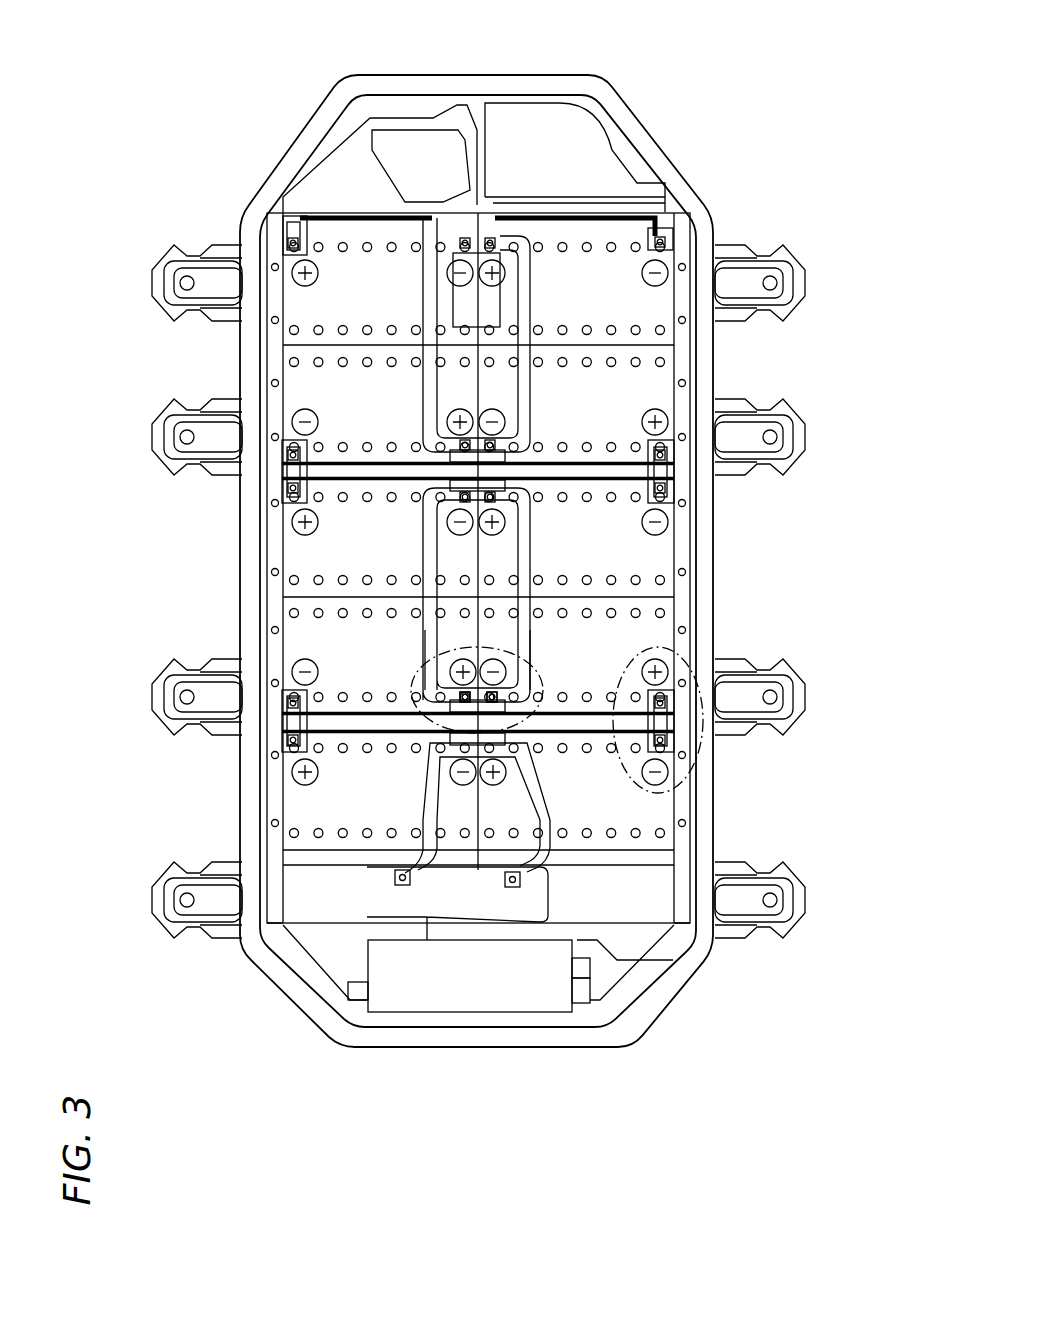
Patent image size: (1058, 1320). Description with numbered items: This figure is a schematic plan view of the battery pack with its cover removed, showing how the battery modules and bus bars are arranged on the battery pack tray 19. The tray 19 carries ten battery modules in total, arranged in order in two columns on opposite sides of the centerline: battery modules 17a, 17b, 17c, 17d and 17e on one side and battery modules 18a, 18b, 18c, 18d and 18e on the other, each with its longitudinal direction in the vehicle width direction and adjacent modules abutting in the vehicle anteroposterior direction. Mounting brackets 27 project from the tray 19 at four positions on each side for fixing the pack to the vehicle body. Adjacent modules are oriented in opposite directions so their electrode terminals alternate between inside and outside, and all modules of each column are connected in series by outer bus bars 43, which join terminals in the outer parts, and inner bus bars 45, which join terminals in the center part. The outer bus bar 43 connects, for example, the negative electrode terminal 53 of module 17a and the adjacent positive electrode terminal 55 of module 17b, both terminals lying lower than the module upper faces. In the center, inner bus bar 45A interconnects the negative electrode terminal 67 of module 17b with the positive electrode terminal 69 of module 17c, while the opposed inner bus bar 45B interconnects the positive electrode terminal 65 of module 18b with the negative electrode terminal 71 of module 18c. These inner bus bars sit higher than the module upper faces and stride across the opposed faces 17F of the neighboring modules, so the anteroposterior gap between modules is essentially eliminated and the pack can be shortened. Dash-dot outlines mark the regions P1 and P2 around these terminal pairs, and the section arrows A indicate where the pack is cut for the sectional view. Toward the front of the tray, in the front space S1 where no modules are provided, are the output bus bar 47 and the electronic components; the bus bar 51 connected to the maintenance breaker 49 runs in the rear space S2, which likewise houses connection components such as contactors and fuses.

The battery module 17a is at (657, 800).
The battery module 17b is at (657, 627).
The battery module 17c is at (655, 542).
The battery module 17d is at (655, 375).
The battery module 17e is at (653, 300).
The faces of the battery modules 17F is at (642, 597).
The battery module 18a is at (298, 803).
The battery module 18b is at (298, 640).
The battery module 18c is at (298, 545).
The battery module 18d is at (298, 373).
The battery module 18e is at (297, 298).
The battery pack tray 19 is at (273, 170).
The mounting bracket 27 is at (170, 920).
The outer bus bar 43 is at (287, 723).
The inner bus bar 45 is at (435, 408).
The inner bus bar 45A is at (533, 633).
The inner bus bar 45B is at (427, 633).
The output bus bar 47 is at (572, 815).
The maintenance breaker 49 is at (483, 303).
The bus bar 51 is at (430, 265).
The negative electrode terminal 53 is at (660, 755).
The positive electrode terminal 55 is at (673, 697).
The positive electrode terminal 65 is at (425, 667).
The negative electrode terminal 67 is at (533, 672).
The positive electrode terminal 69 is at (512, 503).
The negative electrode terminal 71 is at (443, 503).
The position P1 is at (627, 777).
The position P2 is at (422, 720).
The front space S1 is at (323, 947).
The rear space S2 is at (320, 160).
The section line A is at (135, 700).